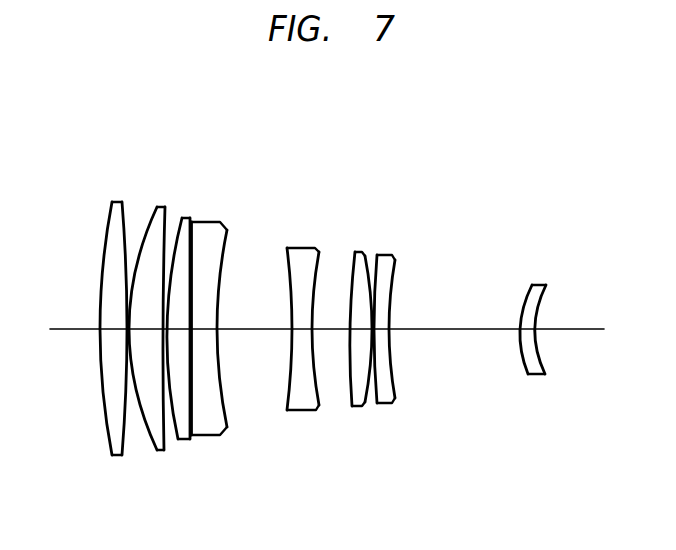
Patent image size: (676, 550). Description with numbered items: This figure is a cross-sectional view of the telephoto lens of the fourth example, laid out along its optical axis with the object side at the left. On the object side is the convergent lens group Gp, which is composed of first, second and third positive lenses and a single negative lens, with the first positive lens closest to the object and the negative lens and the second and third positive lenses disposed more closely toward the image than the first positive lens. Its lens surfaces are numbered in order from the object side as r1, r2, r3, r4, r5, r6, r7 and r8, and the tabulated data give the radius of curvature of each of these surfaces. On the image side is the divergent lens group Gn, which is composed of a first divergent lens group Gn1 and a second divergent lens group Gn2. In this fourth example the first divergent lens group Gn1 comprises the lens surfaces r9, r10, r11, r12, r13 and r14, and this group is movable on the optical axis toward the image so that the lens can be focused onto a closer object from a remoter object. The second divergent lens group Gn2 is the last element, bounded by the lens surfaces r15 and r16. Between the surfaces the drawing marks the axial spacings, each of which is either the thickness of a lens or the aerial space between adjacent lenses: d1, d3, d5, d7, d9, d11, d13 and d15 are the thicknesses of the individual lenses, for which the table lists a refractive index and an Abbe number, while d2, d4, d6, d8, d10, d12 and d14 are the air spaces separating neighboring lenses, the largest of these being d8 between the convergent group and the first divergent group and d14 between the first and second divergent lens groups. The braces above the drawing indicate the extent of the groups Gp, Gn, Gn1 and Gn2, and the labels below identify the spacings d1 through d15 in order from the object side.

The convergent lens group Gp is at (73, 113).
The divergent lens group Gn is at (275, 113).
The first divergent lens group Gn1 is at (437, 146).
The second divergent lens group Gn2 is at (580, 146).
The first lens surface r1 is at (112, 202).
The second lens surface r2 is at (122, 202).
The third lens surface r3 is at (157, 207).
The fourth lens surface r4 is at (165, 207).
The fifth lens surface r5 is at (182, 218).
The sixth lens surface r6 is at (192, 222).
The seventh lens surface r7 is at (226, 229).
The eighth lens surface r8 is at (224, 224).
The ninth lens surface r9 is at (287, 248).
The tenth lens surface r10 is at (318, 250).
The eleventh lens surface r11 is at (355, 252).
The twelfth lens surface r12 is at (365, 255).
The thirteenth lens surface r13 is at (377, 255).
The fourteenth lens surface r14 is at (394, 258).
The fifteenth lens surface r15 is at (532, 285).
The sixteenth lens surface r16 is at (547, 286).
The thickness of first lens d1 is at (113, 331).
The aerial space d2 is at (128, 331).
The thickness of second lens d3 is at (145, 331).
The aerial space d4 is at (165, 331).
The thickness of third lens d5 is at (179, 331).
The aerial space d6 is at (205, 331).
The thickness of fourth lens d7 is at (255, 331).
The aerial space d8 is at (302, 331).
The thickness of fifth lens d9 is at (331, 331).
The aerial space d10 is at (361, 331).
The thickness of sixth lens d11 is at (373, 331).
The aerial space d12 is at (385, 331).
The thickness of seventh lens d13 is at (454, 331).
The aerial space d14 is at (522, 331).
The thickness of eighth lens d15 is at (536, 331).